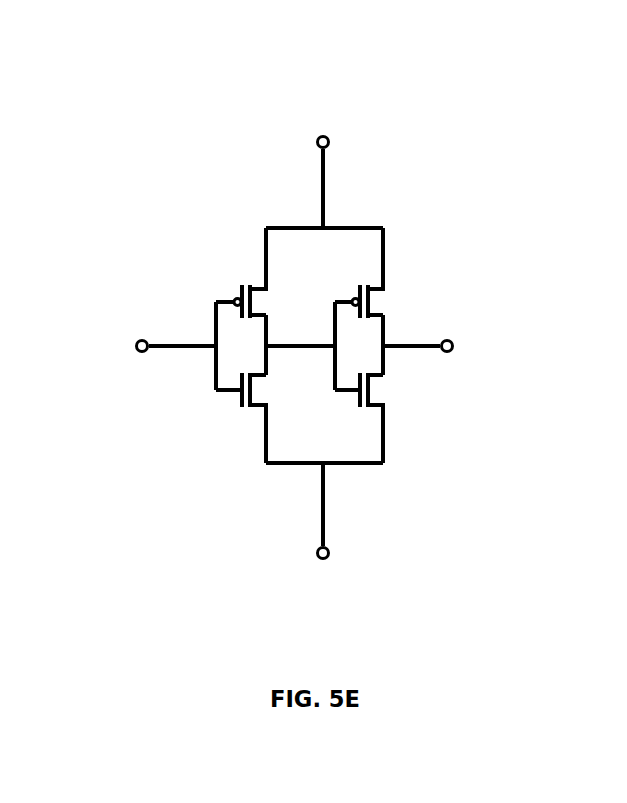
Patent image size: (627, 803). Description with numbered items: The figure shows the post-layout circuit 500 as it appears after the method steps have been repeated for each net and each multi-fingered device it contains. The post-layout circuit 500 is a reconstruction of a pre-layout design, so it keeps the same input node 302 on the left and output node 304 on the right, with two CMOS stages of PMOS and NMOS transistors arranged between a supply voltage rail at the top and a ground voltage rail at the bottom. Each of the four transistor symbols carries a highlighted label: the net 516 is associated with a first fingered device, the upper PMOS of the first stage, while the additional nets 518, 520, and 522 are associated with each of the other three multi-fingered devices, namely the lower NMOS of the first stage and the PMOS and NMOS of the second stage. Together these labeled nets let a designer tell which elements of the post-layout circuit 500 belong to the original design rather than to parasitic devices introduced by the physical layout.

The post-layout circuit 500 is at (407, 112).
The input node 302 is at (151, 346).
The output node 304 is at (443, 345).
The net 516 is at (172, 219).
The net 518 is at (174, 472).
The net 520 is at (500, 244).
The net 522 is at (508, 435).